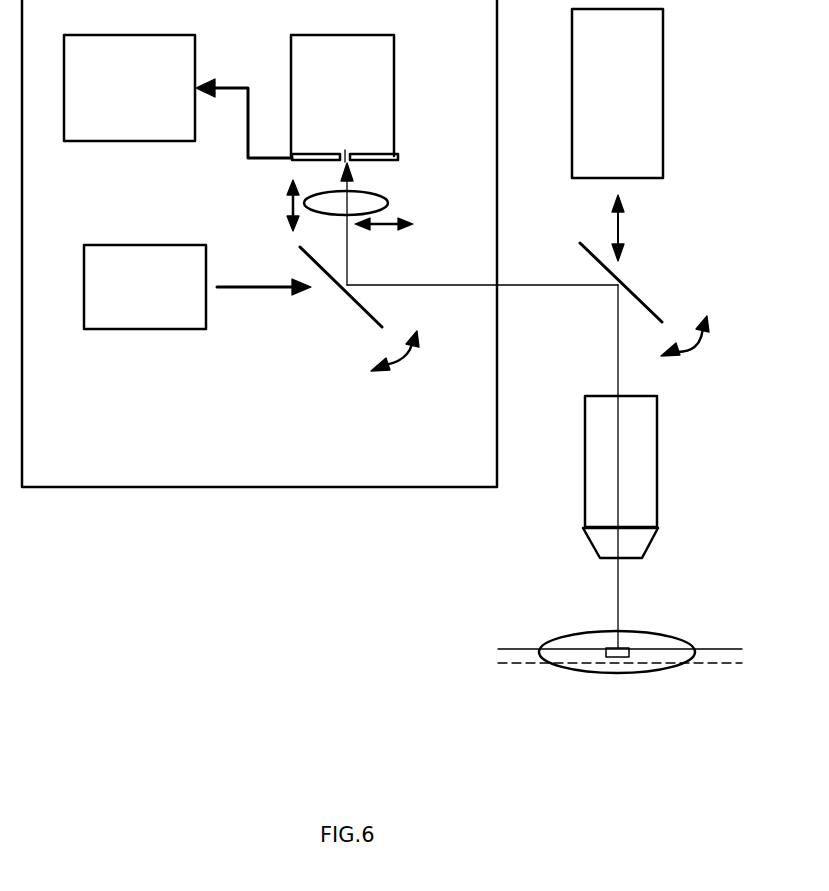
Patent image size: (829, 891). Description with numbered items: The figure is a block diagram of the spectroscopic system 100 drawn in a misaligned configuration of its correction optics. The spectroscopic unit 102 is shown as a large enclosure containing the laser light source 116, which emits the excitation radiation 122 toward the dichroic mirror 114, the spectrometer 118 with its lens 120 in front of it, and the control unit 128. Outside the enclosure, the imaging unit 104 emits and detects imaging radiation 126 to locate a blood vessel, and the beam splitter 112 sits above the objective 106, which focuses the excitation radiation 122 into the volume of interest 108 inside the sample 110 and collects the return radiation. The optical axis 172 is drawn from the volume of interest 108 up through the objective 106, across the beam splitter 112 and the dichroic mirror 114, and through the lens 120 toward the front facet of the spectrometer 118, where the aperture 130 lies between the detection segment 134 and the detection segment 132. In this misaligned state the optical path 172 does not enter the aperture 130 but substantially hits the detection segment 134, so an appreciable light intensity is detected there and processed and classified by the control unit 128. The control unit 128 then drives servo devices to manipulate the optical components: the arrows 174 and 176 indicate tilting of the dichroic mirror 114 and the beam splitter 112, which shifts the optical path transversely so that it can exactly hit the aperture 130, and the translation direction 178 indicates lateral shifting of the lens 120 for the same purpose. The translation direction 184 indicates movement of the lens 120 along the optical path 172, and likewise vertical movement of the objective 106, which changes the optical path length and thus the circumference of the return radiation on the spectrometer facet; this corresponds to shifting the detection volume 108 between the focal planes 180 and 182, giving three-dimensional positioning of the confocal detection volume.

The spectroscopic system 100 is at (418, 559).
The spectroscopic unit 102 is at (228, 489).
The imaging unit 104 is at (664, 136).
The objective 106 is at (658, 470).
The volume of interest 108 is at (617, 658).
The sample 110 is at (668, 673).
The beam splitter 112 is at (652, 312).
The dichroic mirror 114 is at (351, 298).
The laser light source 116 is at (145, 331).
The spectrometer 118 is at (395, 95).
The lens 120 is at (388, 204).
The excitation radiation 122 is at (252, 290).
The imaging radiation 126 is at (620, 232).
The control unit 128 is at (134, 142).
The aperture 130 is at (345, 150).
The detection segment 132 is at (384, 163).
The detection segment 134 is at (292, 163).
The optical axis 172 is at (530, 284).
The tilting direction arrow 174 is at (407, 357).
The tilting direction arrow 176 is at (697, 345).
The translation direction 178 is at (384, 230).
The focal plane 180 is at (720, 648).
The focal plane 182 is at (720, 666).
The translation direction 184 is at (288, 209).